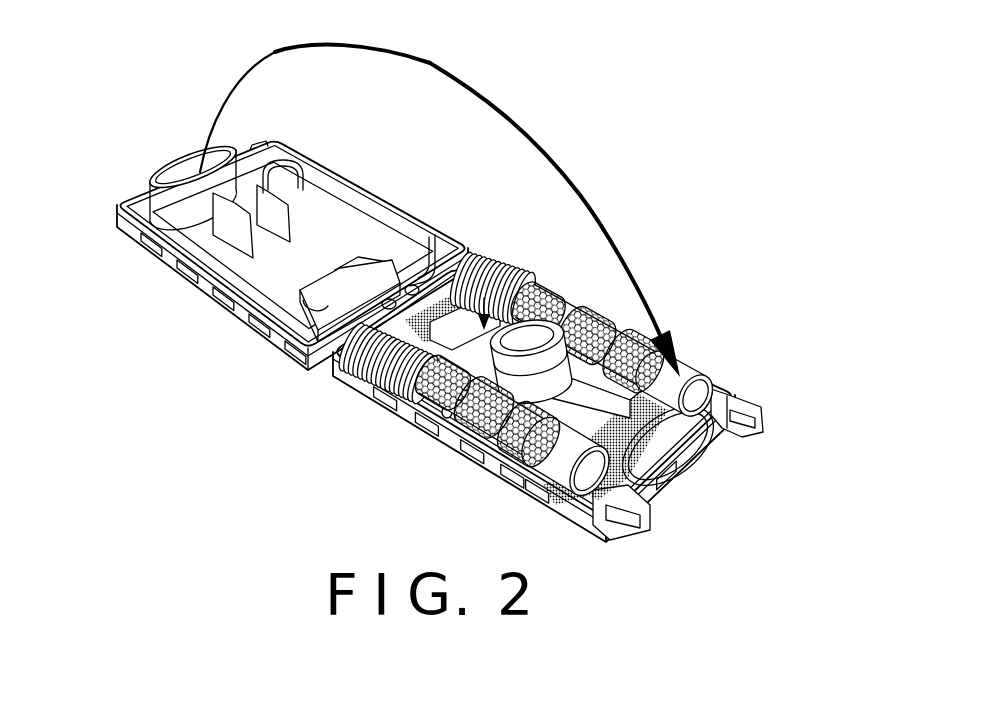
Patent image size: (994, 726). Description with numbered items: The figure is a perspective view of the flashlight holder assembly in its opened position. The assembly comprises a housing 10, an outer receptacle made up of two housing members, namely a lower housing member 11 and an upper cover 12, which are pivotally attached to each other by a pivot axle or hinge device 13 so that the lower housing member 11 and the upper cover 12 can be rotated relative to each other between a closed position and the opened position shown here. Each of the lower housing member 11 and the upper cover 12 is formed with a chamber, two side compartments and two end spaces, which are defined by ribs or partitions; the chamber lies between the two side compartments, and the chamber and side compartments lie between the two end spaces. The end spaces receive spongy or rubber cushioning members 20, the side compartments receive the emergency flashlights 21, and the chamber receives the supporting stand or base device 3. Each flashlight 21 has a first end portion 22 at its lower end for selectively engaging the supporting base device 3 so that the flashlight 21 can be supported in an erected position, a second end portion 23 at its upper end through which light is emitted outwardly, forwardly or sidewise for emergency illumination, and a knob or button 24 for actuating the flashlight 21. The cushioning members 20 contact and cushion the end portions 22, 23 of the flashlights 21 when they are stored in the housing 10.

The housing 10 is at (429, 293).
The lower housing member 11 is at (534, 500).
The upper cover 12 is at (212, 298).
The hinge device 13 is at (413, 287).
The supporting base device 3 is at (500, 245).
The cushioning members 20 is at (513, 340).
The emergency flashlight 21 is at (557, 437).
The first end portion 22 is at (594, 473).
The second end portion 23 is at (362, 377).
The button 24 is at (568, 292).